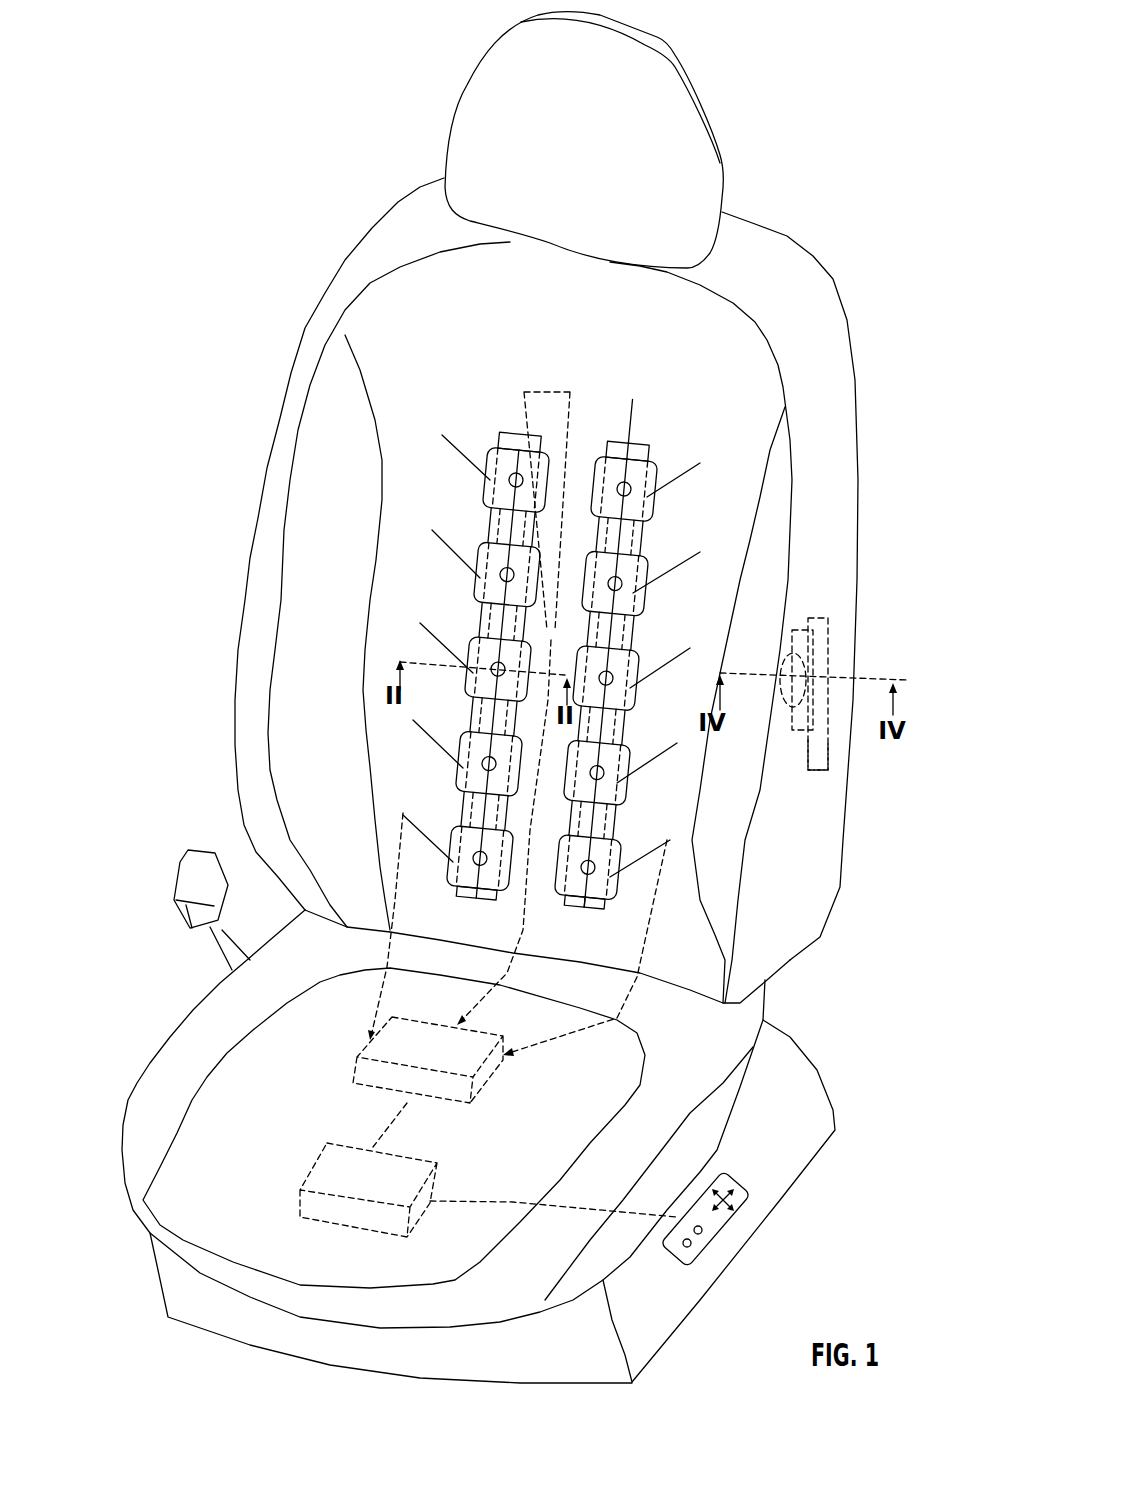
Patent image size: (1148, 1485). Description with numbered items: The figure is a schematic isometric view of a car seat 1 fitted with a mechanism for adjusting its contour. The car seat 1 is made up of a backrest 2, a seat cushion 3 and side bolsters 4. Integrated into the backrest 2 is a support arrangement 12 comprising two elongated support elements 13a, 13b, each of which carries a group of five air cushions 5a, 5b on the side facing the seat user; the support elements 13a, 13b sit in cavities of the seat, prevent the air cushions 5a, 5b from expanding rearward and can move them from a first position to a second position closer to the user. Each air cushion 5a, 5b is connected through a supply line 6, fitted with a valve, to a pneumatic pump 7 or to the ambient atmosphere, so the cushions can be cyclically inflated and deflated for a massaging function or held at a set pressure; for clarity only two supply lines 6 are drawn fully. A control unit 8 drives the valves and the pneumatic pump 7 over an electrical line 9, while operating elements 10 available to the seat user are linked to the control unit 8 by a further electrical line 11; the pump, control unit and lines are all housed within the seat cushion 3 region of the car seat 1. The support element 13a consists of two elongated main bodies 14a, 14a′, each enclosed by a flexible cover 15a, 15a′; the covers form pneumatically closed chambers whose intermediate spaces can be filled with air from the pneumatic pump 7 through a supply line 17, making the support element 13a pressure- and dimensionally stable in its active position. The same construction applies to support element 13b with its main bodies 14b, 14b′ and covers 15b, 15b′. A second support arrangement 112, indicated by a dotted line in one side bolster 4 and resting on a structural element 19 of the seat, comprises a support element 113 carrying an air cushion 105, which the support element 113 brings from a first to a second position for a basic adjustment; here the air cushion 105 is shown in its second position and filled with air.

The car seat 1 is at (192, 296).
The backrest 2 is at (800, 283).
The seat cushion 3 is at (183, 1183).
The side bolsters 4 is at (285, 650).
The air cushions 5a is at (510, 453).
The air cushions 5b is at (640, 470).
The supply lines 6 is at (425, 833).
The pneumatic pump 7 is at (460, 1065).
The control unit 8 is at (327, 1163).
The electrical line 9 is at (400, 1105).
The operating elements 10 is at (717, 1228).
The electrical line 11 is at (503, 1205).
The support arrangement 12 is at (683, 385).
The support element 13a is at (490, 440).
The support element 13b is at (602, 443).
The main body 14a is at (498, 527).
The main body 14a′ is at (533, 530).
The main body 14b is at (600, 638).
The main body 14b′ is at (612, 723).
The flexible cover 15a is at (470, 710).
The flexible cover 15a′ is at (507, 810).
The flexible cover 15b is at (557, 892).
The flexible cover 15b′ is at (617, 892).
The supply line 17 is at (540, 392).
The structural element 19 is at (813, 748).
The air cushion 105 is at (788, 657).
The support arrangement 112 is at (791, 754).
The support element 113 is at (808, 640).